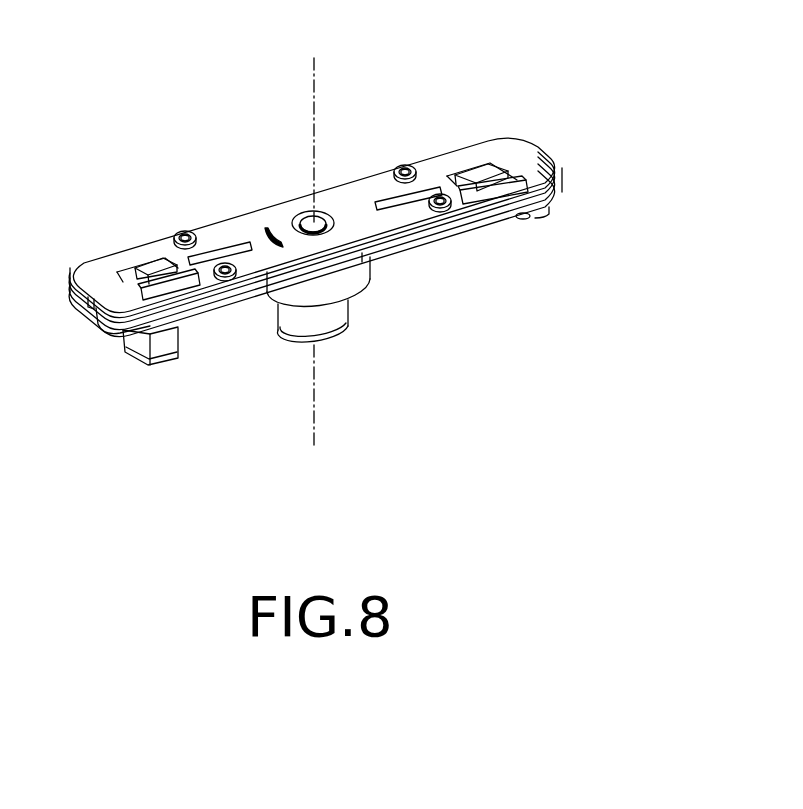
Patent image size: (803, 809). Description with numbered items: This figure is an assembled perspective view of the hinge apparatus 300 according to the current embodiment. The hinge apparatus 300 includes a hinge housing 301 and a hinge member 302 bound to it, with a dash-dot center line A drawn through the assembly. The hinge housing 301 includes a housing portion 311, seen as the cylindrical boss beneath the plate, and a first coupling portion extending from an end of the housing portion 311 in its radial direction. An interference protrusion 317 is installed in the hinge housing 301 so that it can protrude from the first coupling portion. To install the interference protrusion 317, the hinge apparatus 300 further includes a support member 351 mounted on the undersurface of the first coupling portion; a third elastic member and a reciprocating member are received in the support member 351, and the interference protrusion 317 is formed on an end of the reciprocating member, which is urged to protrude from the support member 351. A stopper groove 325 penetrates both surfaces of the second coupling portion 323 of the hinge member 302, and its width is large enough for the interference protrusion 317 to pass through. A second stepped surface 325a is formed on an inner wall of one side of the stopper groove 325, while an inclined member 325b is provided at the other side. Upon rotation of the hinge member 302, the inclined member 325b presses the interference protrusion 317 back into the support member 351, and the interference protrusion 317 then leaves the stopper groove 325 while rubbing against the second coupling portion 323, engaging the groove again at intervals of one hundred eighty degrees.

The hinge apparatus 300 is at (204, 56).
The hinge housing 301 is at (342, 337).
The hinge member 302 is at (510, 138).
The housing portion 311 is at (373, 281).
The interference protrusion 317 is at (152, 264).
The second coupling portion 323 is at (497, 137).
The stopper groove 325 is at (507, 170).
The second stepped surface 325a is at (481, 165).
The inclined member 325b is at (518, 212).
The support member 351 is at (142, 344).
The axis A is at (314, 107).